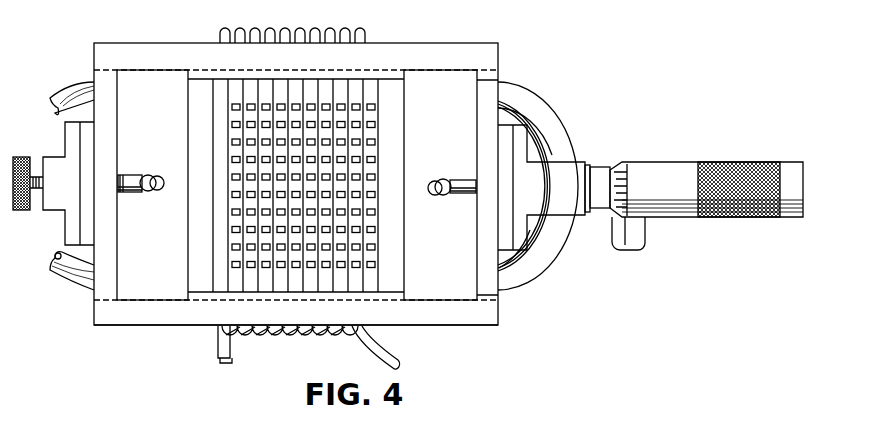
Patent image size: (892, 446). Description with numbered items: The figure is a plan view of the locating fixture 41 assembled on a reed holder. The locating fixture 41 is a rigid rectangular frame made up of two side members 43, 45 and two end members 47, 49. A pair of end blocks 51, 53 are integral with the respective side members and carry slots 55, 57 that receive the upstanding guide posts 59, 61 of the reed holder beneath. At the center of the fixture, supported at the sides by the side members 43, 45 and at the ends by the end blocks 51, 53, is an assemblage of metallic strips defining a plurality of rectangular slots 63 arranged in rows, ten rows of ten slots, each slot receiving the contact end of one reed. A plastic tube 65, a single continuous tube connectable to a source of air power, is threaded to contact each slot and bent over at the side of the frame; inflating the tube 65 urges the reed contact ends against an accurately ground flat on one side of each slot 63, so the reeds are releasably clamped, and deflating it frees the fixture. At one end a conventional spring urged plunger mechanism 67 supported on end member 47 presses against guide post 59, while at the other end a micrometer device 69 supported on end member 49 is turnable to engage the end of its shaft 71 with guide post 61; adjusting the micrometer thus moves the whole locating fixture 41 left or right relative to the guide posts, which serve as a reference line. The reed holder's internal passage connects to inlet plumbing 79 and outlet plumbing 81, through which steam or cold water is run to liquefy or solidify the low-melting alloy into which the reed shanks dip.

The locating fixture 41 is at (510, 308).
The side member 43 is at (492, 53).
The side member 45 is at (103, 318).
The end member 47 is at (115, 260).
The end member 49 is at (480, 263).
The end block 51 is at (142, 103).
The end block 53 is at (430, 111).
The slot 55 is at (160, 192).
The slot 57 is at (435, 190).
The guide post 59 is at (150, 176).
The guide post 61 is at (443, 181).
The rectangular slots 63 is at (370, 163).
The plastic tube 65 is at (377, 353).
The spring urged plunger mechanism 67 is at (133, 175).
The micrometer device 69 is at (675, 168).
The shaft 71 is at (467, 180).
The inlet plumbing 79 is at (72, 278).
The outlet plumbing 81 is at (560, 258).